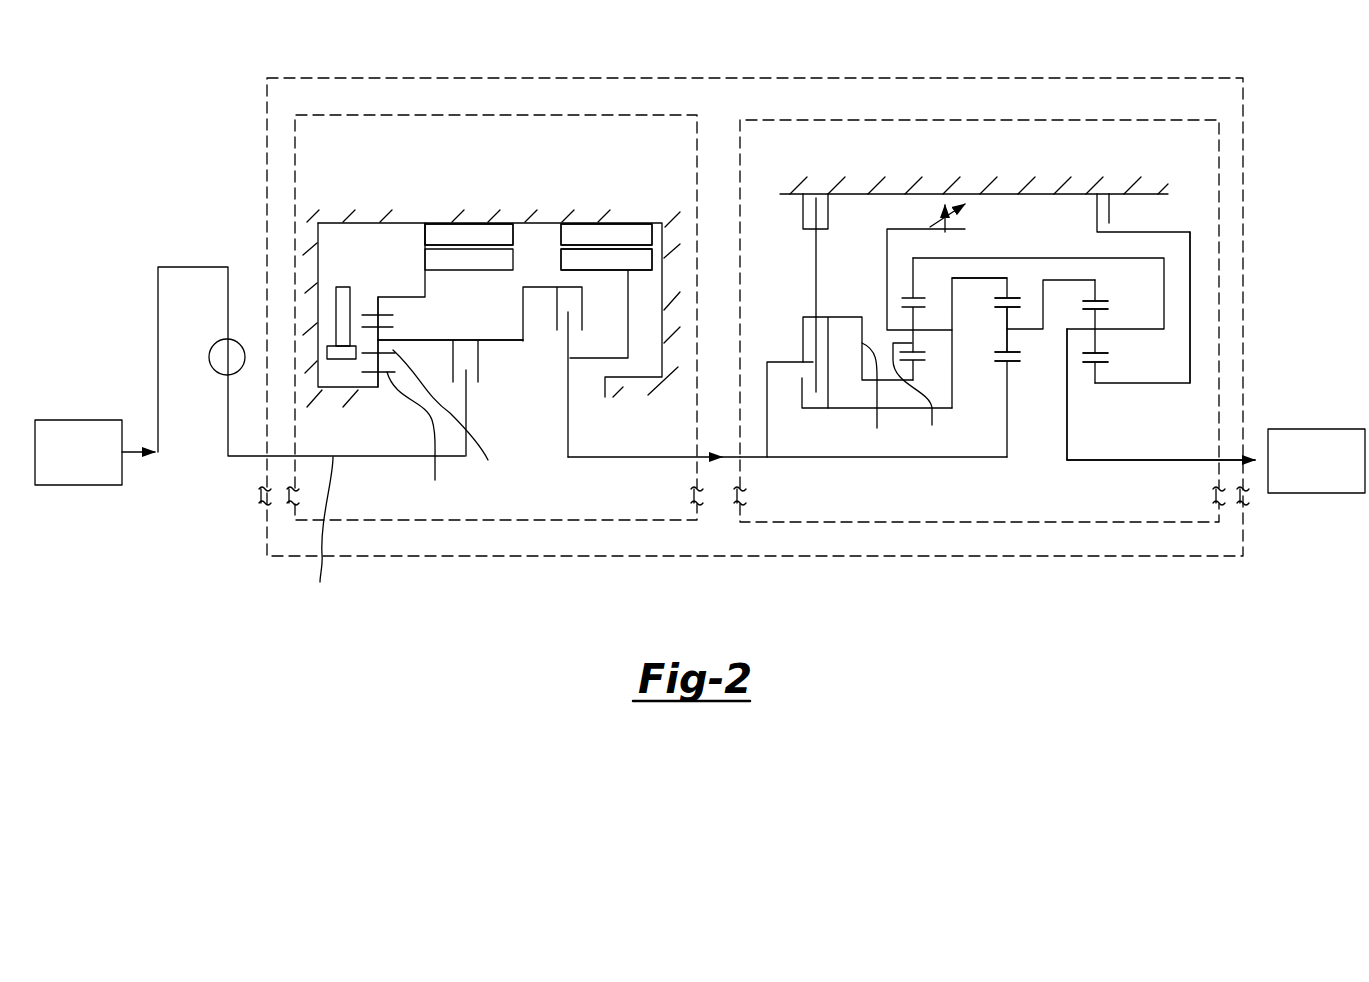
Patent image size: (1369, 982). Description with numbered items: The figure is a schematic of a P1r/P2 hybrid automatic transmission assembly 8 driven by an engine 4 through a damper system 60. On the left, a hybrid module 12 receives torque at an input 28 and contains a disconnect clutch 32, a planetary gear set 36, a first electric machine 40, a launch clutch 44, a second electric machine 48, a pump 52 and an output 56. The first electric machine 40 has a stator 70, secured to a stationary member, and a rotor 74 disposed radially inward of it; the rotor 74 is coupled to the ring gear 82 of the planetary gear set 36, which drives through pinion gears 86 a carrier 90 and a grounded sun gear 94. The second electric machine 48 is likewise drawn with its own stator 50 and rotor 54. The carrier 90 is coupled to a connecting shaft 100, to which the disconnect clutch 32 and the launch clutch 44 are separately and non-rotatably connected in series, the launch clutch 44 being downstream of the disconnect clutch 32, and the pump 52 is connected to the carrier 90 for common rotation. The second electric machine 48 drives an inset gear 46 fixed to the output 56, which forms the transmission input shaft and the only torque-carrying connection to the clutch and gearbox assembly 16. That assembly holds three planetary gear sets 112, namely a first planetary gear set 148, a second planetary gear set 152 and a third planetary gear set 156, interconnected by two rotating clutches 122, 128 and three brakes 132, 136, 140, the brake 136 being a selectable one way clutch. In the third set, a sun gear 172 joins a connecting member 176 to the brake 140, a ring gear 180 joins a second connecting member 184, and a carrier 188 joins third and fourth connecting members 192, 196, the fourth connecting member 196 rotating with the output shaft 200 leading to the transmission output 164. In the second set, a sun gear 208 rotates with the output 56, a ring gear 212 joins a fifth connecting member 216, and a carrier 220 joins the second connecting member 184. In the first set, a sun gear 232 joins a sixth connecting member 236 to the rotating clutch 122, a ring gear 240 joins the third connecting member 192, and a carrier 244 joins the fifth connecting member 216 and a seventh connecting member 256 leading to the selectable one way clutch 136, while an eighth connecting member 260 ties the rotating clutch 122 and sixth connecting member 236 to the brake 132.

The engine 4 is at (72, 418).
The hybrid automatic transmission assembly 8 is at (928, 76).
The hybrid module 12 is at (557, 110).
The clutch and gearbox assembly 16 is at (1172, 113).
The input 28 is at (319, 532).
The disconnect clutch 32 is at (480, 377).
The planetary gear set 36 is at (372, 284).
The first electric machine 40 is at (426, 222).
The launch clutch 44 is at (557, 322).
The inset gear 46 is at (630, 330).
The second electric machine 48 is at (647, 228).
The stator of second electric machine 50 is at (573, 237).
The pump 52 is at (331, 305).
The rotor of second electric machine 54 is at (637, 260).
The output 56 is at (596, 458).
The damper system 60 is at (212, 370).
The stator 70 is at (425, 237).
The rotor 74 is at (455, 260).
The ring gear 82 is at (370, 286).
The pinion gears 86 is at (393, 327).
The carrier 90 is at (453, 416).
The sun gear 94 is at (416, 439).
The connecting shaft 100 is at (510, 345).
The three planetary gear sets 112 is at (772, 532).
The rotating clutch 122 is at (828, 332).
The rotating clutch 128 is at (828, 392).
The clutch brake 132 is at (805, 210).
The selectable one way clutch 136 is at (965, 212).
The clutch brake 140 is at (1122, 213).
The first planetary gear set 148 is at (902, 425).
The second planetary gear set 152 is at (998, 425).
The third planetary gear set 156 is at (1175, 394).
The transmission output 164 is at (1293, 493).
The sun gear 172 is at (1102, 363).
The connecting member 176 is at (1190, 317).
The ring gear 180 is at (1100, 300).
The second connecting member 184 is at (1086, 258).
The carrier 188 is at (1097, 318).
The third connecting member 192 is at (983, 258).
The fourth connecting member 196 is at (1067, 447).
The output shaft 200 is at (1110, 460).
The sun gear 208 is at (1010, 362).
The ring gear 212 is at (1012, 298).
The fifth connecting member 216 is at (965, 282).
The carrier 220 is at (1008, 338).
The sun gear 232 is at (918, 362).
The sixth connecting member 236 is at (880, 400).
The ring gear 240 is at (922, 297).
The carrier 244 is at (922, 395).
The seventh connecting member 256 is at (887, 229).
The eighth connecting member 260 is at (812, 262).